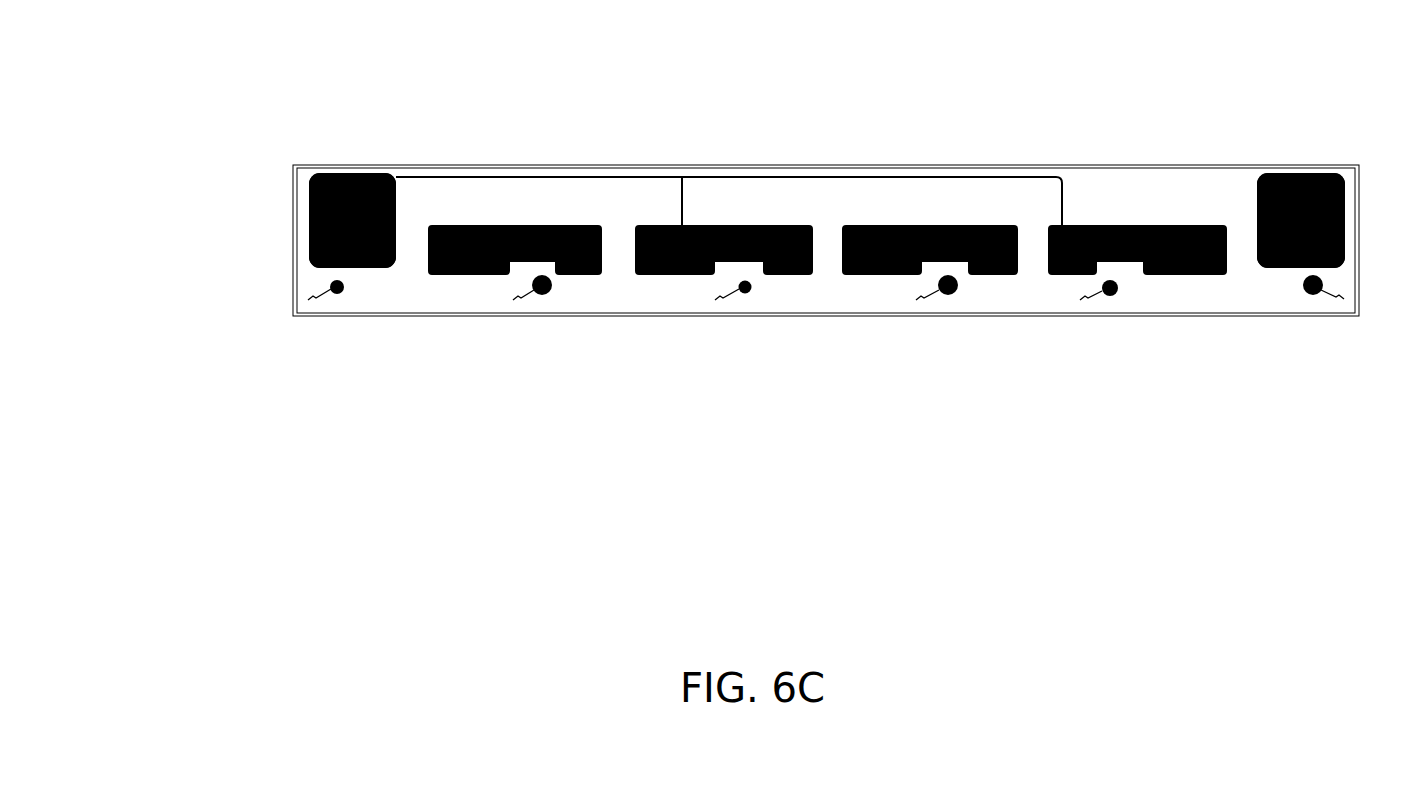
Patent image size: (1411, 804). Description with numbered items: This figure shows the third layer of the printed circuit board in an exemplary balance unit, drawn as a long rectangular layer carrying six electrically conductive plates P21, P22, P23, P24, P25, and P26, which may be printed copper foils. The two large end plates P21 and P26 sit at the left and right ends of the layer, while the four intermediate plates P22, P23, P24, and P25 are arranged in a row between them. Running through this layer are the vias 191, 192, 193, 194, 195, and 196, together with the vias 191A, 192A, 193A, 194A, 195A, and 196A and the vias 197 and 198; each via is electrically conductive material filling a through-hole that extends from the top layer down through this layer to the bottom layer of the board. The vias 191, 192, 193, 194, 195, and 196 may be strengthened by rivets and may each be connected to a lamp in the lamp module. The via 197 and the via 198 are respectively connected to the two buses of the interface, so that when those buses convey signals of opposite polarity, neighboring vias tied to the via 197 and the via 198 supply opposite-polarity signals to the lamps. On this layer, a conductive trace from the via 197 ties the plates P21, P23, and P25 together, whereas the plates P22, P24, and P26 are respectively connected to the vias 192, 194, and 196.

The via 191 is at (341, 293).
The via 191A is at (310, 300).
The via 192 is at (547, 294).
The via 192A is at (515, 299).
The via 193 is at (749, 292).
The via 193A is at (717, 299).
The via 194 is at (953, 294).
The via 194A is at (918, 299).
The via 195 is at (1116, 294).
The via 195A is at (1085, 299).
The via 196 is at (1308, 294).
The via 196A is at (1343, 299).
The via 197 is at (441, 179).
The via 198 is at (550, 206).
The electrically conductive plate P21 is at (392, 270).
The electrically conductive plate P22 is at (603, 228).
The electrically conductive plate P23 is at (675, 275).
The electrically conductive plate P24 is at (948, 227).
The electrically conductive plate P25 is at (1212, 273).
The electrically conductive plate P26 is at (1257, 188).